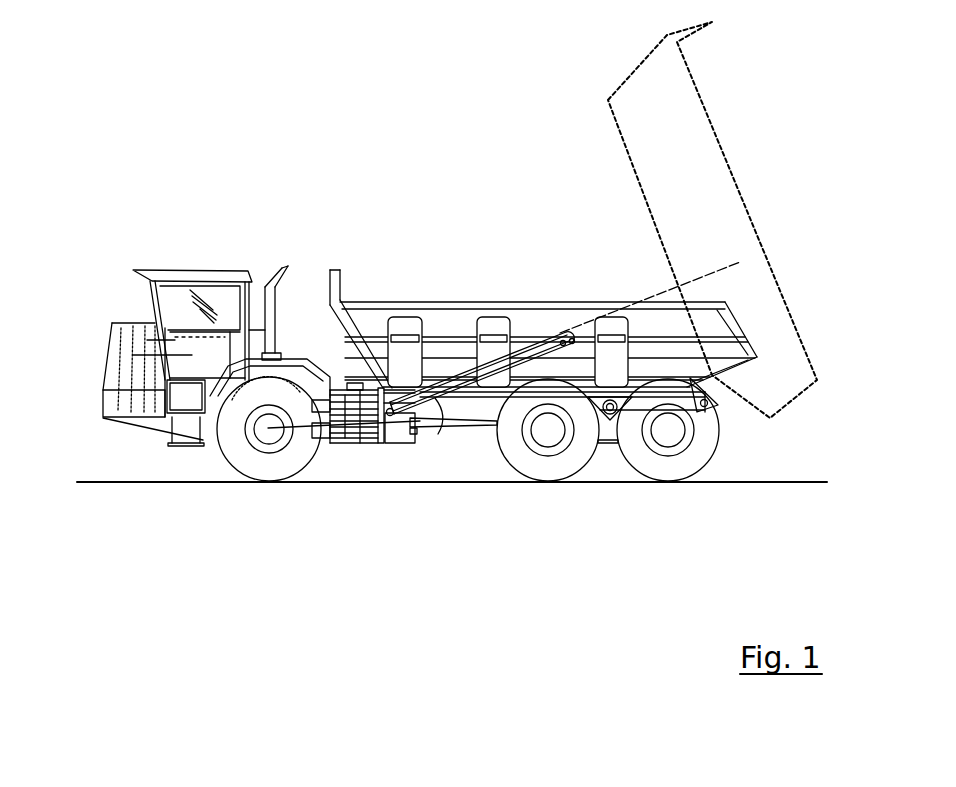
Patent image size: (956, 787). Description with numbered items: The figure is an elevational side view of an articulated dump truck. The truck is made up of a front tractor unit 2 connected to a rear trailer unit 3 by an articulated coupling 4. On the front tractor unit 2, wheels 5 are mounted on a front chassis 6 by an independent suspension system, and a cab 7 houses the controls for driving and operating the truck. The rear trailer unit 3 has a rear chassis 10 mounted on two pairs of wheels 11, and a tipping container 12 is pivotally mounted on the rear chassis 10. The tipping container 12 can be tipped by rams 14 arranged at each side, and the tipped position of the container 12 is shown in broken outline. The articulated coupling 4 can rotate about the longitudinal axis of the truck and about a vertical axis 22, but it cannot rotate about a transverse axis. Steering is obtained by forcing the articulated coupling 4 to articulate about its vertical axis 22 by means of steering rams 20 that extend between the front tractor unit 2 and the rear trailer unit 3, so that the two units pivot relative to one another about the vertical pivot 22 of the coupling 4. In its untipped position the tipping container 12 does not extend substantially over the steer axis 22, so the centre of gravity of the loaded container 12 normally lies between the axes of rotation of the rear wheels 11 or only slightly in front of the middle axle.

The front tractor unit 2 is at (257, 258).
The rear trailer unit 3 is at (483, 302).
The articulated coupling 4 is at (377, 447).
The wheels 5 is at (258, 468).
The front chassis 6 is at (147, 428).
The cab 7 is at (175, 290).
The rear chassis 10 is at (482, 400).
The wheels 11 is at (580, 448).
The tipping container 12 is at (573, 313).
The rams 14 is at (436, 398).
The steering rams 20 is at (343, 440).
The vertical axis 22 is at (351, 387).